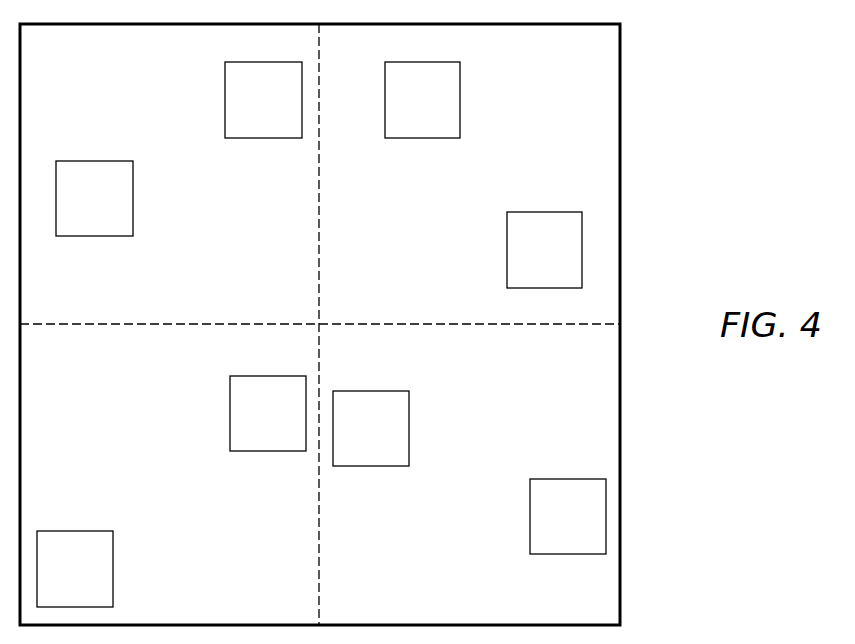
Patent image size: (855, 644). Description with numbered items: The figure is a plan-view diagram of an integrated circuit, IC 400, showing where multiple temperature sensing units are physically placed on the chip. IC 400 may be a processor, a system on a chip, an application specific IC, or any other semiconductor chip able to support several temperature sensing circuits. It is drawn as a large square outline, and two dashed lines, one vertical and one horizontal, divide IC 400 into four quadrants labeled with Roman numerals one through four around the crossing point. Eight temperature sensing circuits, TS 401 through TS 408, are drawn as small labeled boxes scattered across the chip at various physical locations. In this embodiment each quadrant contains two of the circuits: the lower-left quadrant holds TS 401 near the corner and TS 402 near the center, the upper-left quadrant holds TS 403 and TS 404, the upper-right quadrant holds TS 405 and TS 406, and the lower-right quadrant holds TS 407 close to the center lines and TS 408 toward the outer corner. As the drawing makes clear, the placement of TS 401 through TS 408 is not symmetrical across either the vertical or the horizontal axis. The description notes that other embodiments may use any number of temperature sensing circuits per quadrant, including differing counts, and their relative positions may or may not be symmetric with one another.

The integrated circuit 400 is at (88, 58).
The temperature sensing circuit 401 is at (93, 594).
The temperature sensing circuit 402 is at (286, 438).
The temperature sensing circuit 403 is at (112, 224).
The temperature sensing circuit 404 is at (281, 125).
The temperature sensing circuit 405 is at (440, 126).
The temperature sensing circuit 406 is at (562, 274).
The temperature sensing circuit 407 is at (389, 453).
The temperature sensing circuit 408 is at (586, 542).